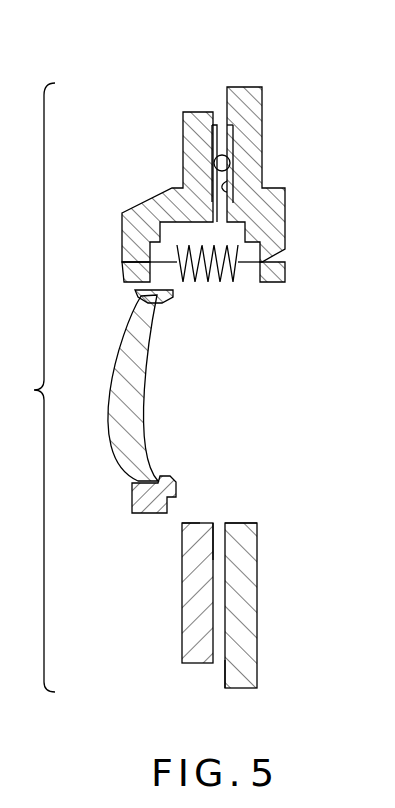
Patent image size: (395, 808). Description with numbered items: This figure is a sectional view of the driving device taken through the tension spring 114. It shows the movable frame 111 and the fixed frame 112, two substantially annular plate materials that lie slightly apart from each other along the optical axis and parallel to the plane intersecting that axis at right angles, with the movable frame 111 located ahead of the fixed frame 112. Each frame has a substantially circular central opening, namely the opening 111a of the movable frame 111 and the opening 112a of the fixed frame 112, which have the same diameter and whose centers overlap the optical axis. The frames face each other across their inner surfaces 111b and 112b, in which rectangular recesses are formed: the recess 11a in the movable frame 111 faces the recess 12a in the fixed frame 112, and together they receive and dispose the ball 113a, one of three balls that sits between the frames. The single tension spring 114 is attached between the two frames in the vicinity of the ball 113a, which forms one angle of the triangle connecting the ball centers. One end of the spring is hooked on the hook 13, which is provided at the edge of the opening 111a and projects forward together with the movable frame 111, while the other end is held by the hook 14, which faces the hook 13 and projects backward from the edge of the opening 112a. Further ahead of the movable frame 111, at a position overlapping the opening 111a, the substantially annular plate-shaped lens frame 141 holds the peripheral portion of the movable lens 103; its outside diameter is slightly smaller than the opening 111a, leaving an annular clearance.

The recess 11a is at (222, 124).
The ball 113a is at (230, 163).
The recess 12a is at (236, 188).
The hook 13 is at (124, 232).
The hook 14 is at (285, 240).
The tension spring 114 is at (222, 284).
The movable lens 103 is at (112, 413).
The lens frame 141 is at (136, 500).
The movable frame 111 is at (190, 624).
The opening 111a is at (190, 524).
The inner surface 111b is at (215, 530).
The fixed frame 112 is at (250, 612).
The opening 112a is at (242, 523).
The inner surface 112b is at (223, 673).